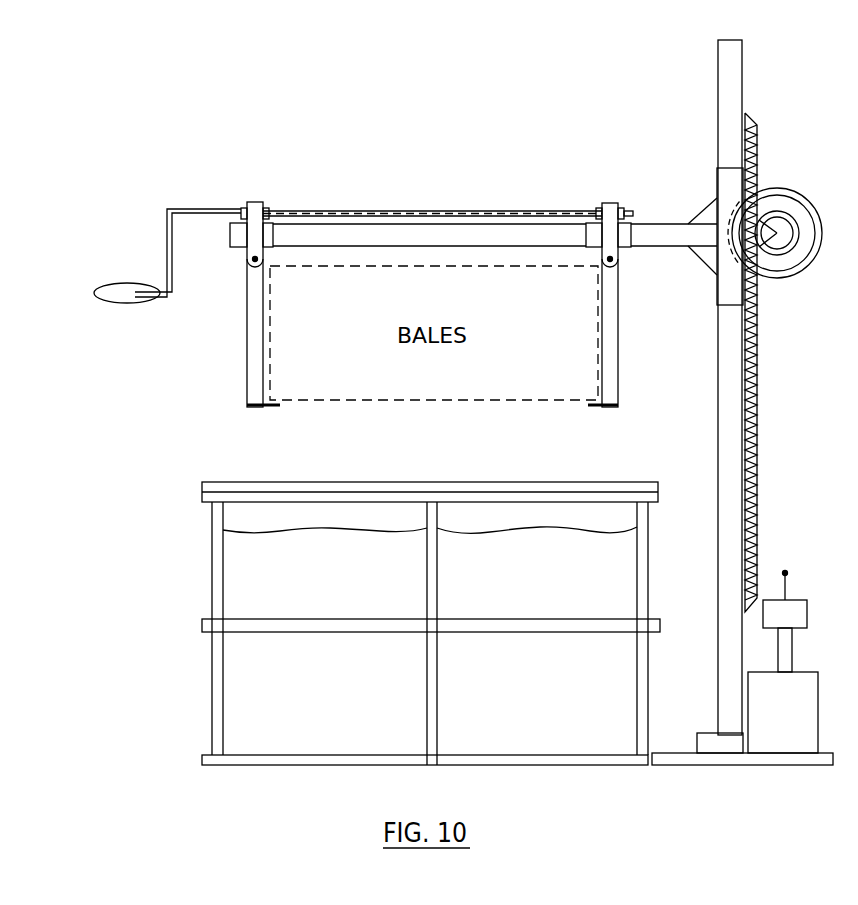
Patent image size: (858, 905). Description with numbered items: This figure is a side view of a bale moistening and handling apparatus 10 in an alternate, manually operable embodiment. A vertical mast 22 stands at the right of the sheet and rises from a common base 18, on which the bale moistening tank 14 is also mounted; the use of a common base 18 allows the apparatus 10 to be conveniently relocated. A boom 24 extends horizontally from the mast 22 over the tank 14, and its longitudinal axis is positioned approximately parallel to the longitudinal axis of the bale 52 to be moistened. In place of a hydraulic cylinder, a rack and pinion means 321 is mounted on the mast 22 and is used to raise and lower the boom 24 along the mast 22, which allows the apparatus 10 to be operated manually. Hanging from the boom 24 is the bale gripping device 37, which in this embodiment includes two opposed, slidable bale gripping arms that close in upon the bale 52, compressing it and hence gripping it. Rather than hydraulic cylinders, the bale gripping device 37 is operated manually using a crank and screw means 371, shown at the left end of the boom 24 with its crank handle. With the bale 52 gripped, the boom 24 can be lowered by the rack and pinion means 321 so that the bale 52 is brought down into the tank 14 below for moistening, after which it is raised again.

The crank and screw means 371 is at (215, 209).
The bale gripping device 37 is at (253, 383).
The bale 52 is at (588, 368).
The boom 24 is at (662, 232).
The mast 22 is at (730, 444).
The rack and pinion means 321 is at (785, 268).
The common base 18 is at (768, 766).
The bale moistening and handling apparatus 10 is at (695, 823).
The bale moistening tank 14 is at (281, 756).